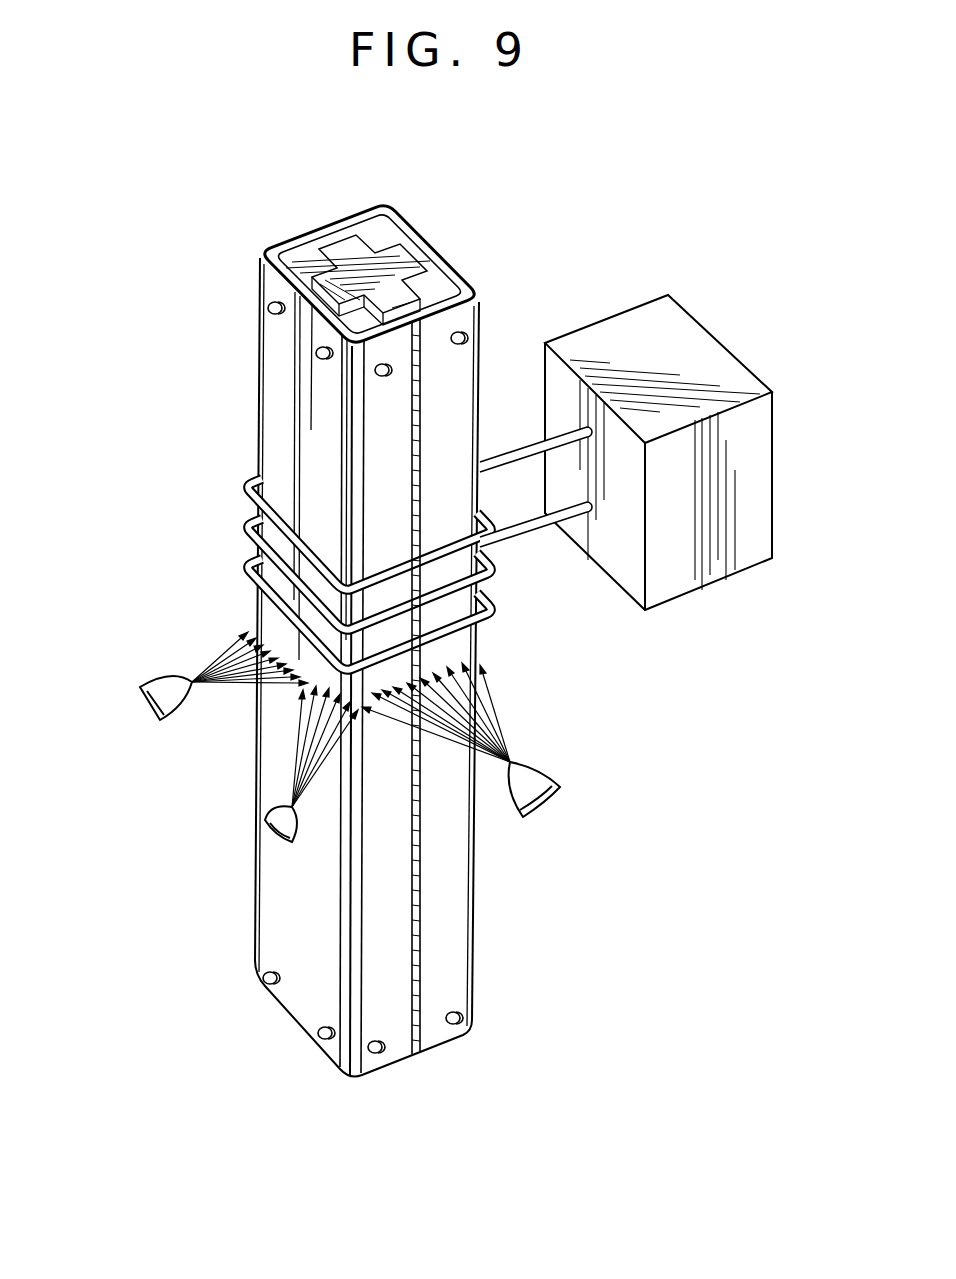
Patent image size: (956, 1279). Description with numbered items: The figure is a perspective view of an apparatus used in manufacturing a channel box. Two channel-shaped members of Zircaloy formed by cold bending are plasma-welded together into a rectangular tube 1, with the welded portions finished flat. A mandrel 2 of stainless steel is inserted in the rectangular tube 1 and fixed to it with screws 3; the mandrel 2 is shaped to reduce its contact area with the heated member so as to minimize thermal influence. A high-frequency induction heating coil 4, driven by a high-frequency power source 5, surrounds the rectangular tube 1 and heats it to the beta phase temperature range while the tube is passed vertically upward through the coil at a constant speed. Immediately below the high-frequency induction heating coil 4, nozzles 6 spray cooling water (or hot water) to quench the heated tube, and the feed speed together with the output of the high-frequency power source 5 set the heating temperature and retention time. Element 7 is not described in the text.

The rectangular tube 1 is at (255, 893).
The mandrel 2 is at (343, 262).
The screws 3 is at (268, 304).
The high-frequency induction heating coil 4 is at (391, 572).
The high-frequency power source 5 is at (705, 345).
The nozzles 6 is at (166, 688).
The rod 7 is at (425, 447).